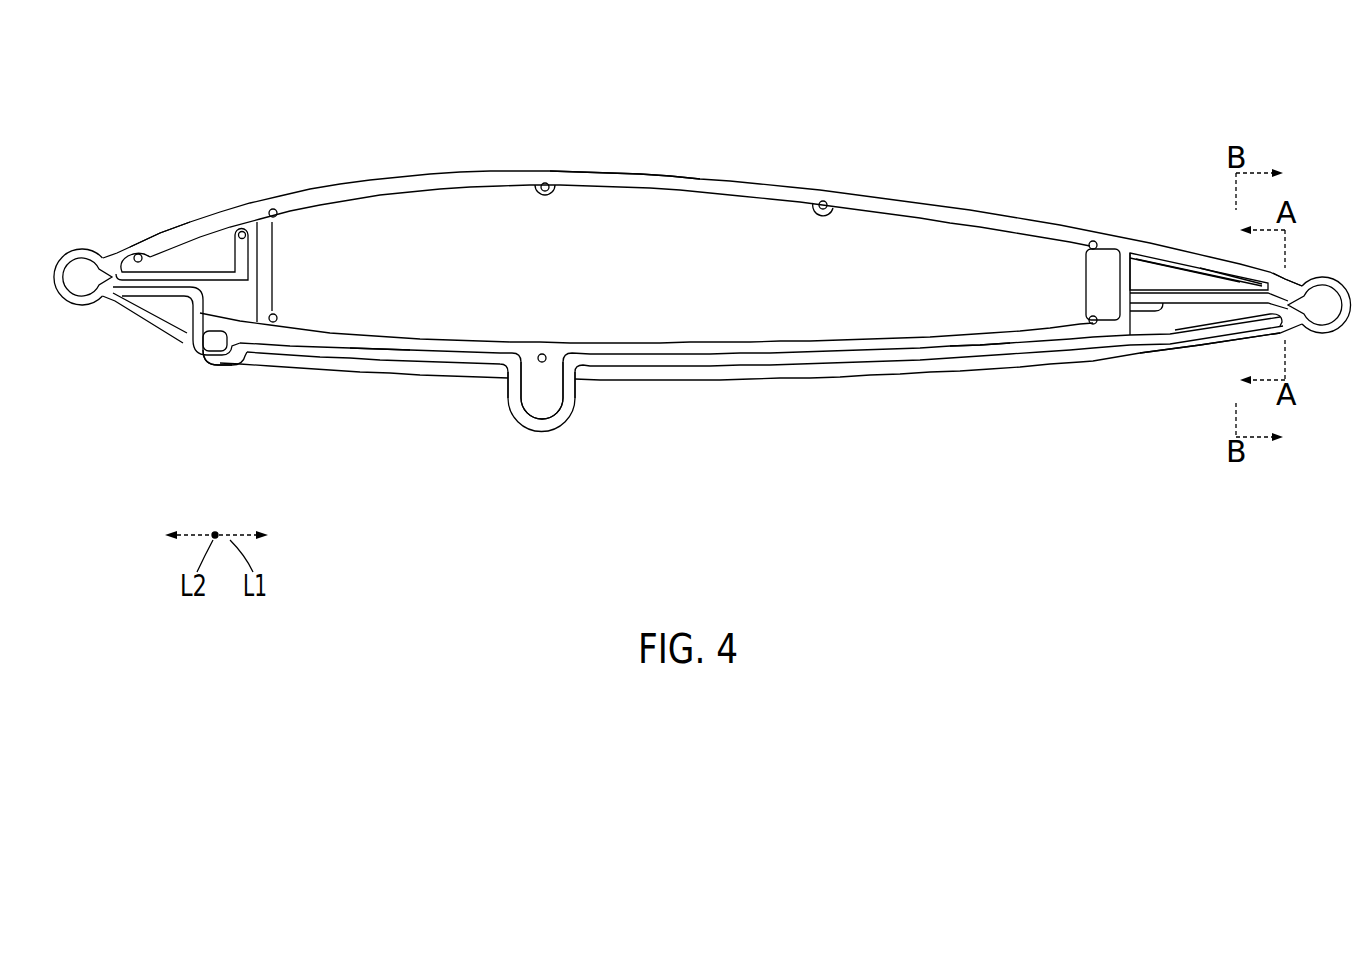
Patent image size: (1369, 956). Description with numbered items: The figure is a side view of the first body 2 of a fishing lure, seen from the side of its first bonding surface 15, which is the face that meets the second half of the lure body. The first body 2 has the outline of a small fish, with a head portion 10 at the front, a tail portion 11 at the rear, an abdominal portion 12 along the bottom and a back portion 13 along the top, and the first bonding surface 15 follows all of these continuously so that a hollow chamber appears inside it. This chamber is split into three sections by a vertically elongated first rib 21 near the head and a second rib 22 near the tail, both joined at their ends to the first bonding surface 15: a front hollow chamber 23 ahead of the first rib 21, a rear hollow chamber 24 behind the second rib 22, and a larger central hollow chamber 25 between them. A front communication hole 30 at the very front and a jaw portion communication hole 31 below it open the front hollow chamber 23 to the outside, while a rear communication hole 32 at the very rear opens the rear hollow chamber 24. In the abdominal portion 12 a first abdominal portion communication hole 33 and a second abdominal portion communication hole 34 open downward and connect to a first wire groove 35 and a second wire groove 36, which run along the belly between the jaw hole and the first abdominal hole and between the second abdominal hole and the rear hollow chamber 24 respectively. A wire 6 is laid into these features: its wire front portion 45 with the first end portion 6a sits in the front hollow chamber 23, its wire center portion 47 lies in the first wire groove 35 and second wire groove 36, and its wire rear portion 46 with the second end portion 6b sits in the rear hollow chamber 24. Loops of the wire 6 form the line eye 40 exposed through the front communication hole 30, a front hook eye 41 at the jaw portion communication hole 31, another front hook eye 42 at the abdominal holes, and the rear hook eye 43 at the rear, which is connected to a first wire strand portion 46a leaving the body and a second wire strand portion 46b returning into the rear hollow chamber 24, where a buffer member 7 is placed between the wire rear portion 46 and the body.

The first body 2 is at (950, 192).
The wire 6 is at (981, 360).
The first end portion 6a is at (248, 245).
The second end portion 6b is at (1122, 300).
The buffer member 7 is at (1216, 280).
The head portion 10 is at (160, 231).
The tail portion 11 is at (1242, 268).
The abdominal portion 12 is at (620, 382).
The back portion 13 is at (632, 171).
The first bonding surface 15 is at (738, 190).
The first rib 21 is at (268, 268).
The second rib 22 is at (1118, 262).
The front hollow chamber 23 is at (205, 258).
The rear hollow chamber 24 is at (1188, 277).
The central hollow chamber 25 is at (730, 282).
The front communication hole 30 is at (118, 298).
The jaw portion communication hole 31 is at (200, 356).
The rear communication hole 32 is at (1306, 281).
The first abdominal portion communication hole 33 is at (511, 390).
The second abdominal portion communication hole 34 is at (572, 390).
The first wire groove 35 is at (372, 352).
The second wire groove 36 is at (833, 358).
The line eye 40 is at (90, 251).
The front hook eye 41 is at (228, 366).
The front hook eye 42 is at (542, 432).
The rear hook eye 43 is at (1318, 334).
The wire front portion 45 is at (166, 303).
The wire rear portion 46 is at (1148, 345).
The first wire strand portion 46a is at (1222, 316).
The second wire strand portion 46b is at (1170, 262).
The wire center portion 47 is at (742, 370).